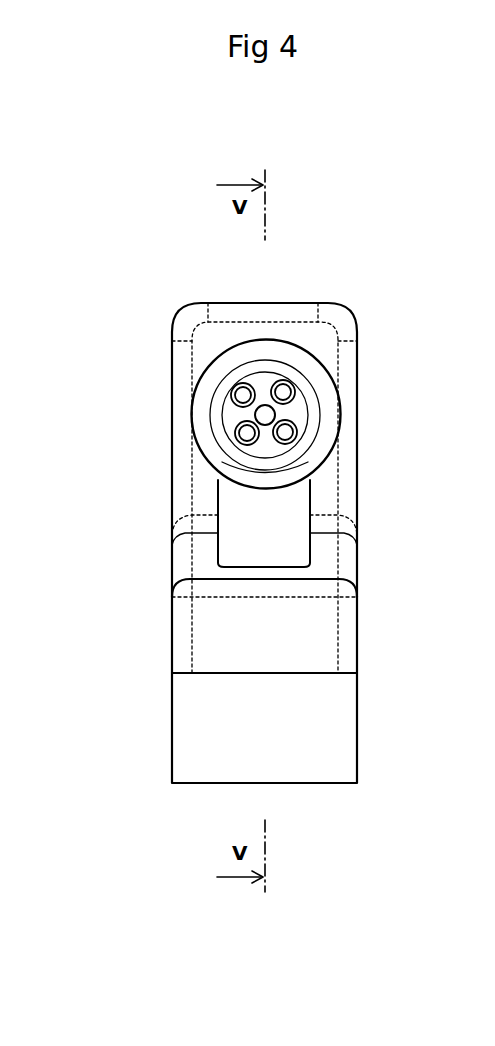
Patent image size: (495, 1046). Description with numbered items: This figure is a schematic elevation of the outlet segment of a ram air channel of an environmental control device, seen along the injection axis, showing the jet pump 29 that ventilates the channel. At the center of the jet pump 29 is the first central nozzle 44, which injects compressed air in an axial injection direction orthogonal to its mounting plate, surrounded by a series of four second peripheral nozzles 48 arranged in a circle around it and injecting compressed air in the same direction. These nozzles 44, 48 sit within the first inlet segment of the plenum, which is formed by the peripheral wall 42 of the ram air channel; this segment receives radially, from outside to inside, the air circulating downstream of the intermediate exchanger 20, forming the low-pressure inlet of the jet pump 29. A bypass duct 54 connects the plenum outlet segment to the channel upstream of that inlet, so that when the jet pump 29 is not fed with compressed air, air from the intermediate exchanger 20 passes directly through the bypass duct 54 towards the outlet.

The intermediate exchanger 20 is at (193, 727).
The peripheral wall 42 is at (358, 513).
The bypass duct 54 is at (247, 522).
The jet pump 29 is at (327, 401).
The first central nozzle 44 is at (263, 412).
The second peripheral nozzles 48 is at (246, 393).